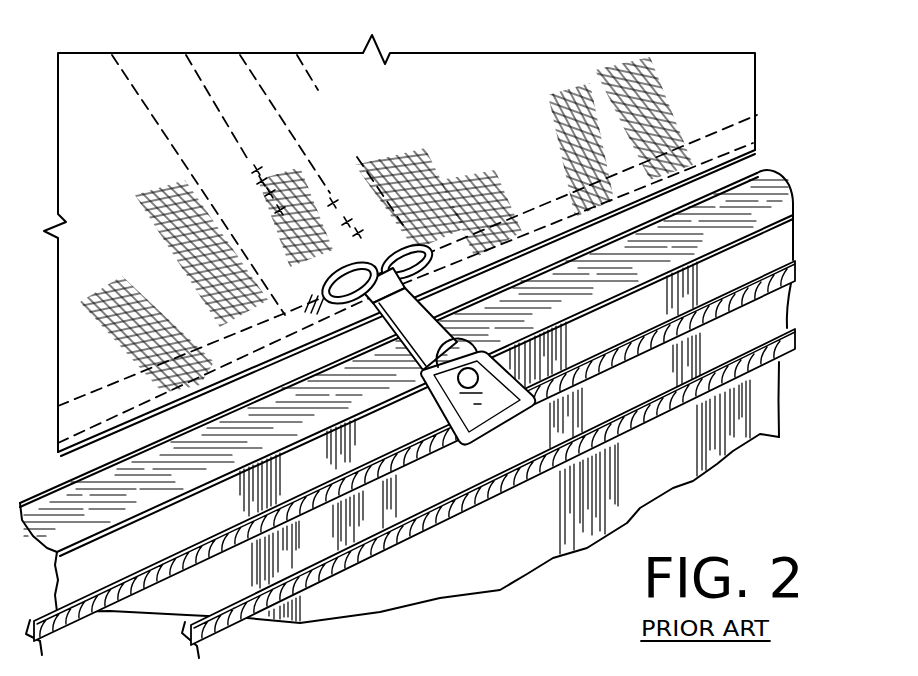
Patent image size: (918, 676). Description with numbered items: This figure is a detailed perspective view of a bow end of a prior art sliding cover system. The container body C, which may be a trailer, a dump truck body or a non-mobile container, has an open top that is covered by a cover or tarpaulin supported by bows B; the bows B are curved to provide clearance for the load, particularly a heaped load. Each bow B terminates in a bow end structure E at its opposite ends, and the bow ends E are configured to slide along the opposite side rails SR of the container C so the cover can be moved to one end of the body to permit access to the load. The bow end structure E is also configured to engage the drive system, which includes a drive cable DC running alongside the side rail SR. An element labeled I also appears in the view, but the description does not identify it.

The bows B is at (262, 137).
The insulation panel I is at (499, 150).
The side rails SR is at (760, 203).
The drive cable DC is at (778, 350).
The container body C is at (756, 415).
The bow end structure E is at (378, 322).